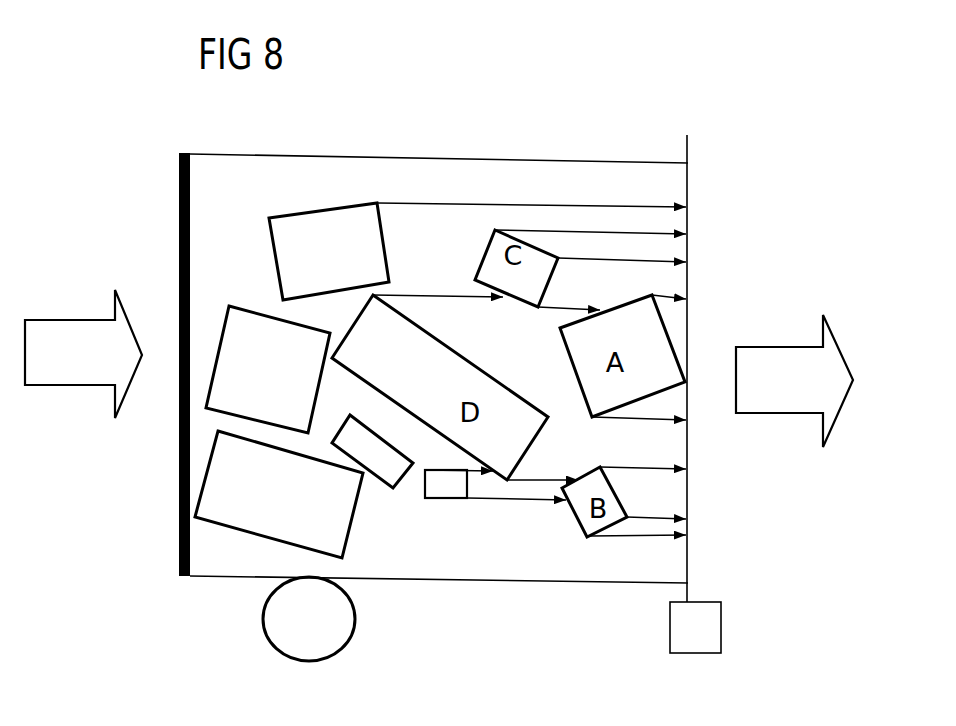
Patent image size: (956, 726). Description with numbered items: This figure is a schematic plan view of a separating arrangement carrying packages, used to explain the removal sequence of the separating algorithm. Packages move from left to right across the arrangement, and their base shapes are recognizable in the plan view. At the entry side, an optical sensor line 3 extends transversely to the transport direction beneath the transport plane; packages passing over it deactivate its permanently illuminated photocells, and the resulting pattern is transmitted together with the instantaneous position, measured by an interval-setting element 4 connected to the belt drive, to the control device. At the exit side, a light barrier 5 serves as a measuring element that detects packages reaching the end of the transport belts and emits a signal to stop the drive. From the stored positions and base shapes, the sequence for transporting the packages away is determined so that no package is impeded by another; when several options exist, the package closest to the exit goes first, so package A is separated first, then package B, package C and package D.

The optical sensor line 3 is at (178, 173).
The interval-setting element 4 is at (290, 617).
The light barrier 5 is at (695, 627).